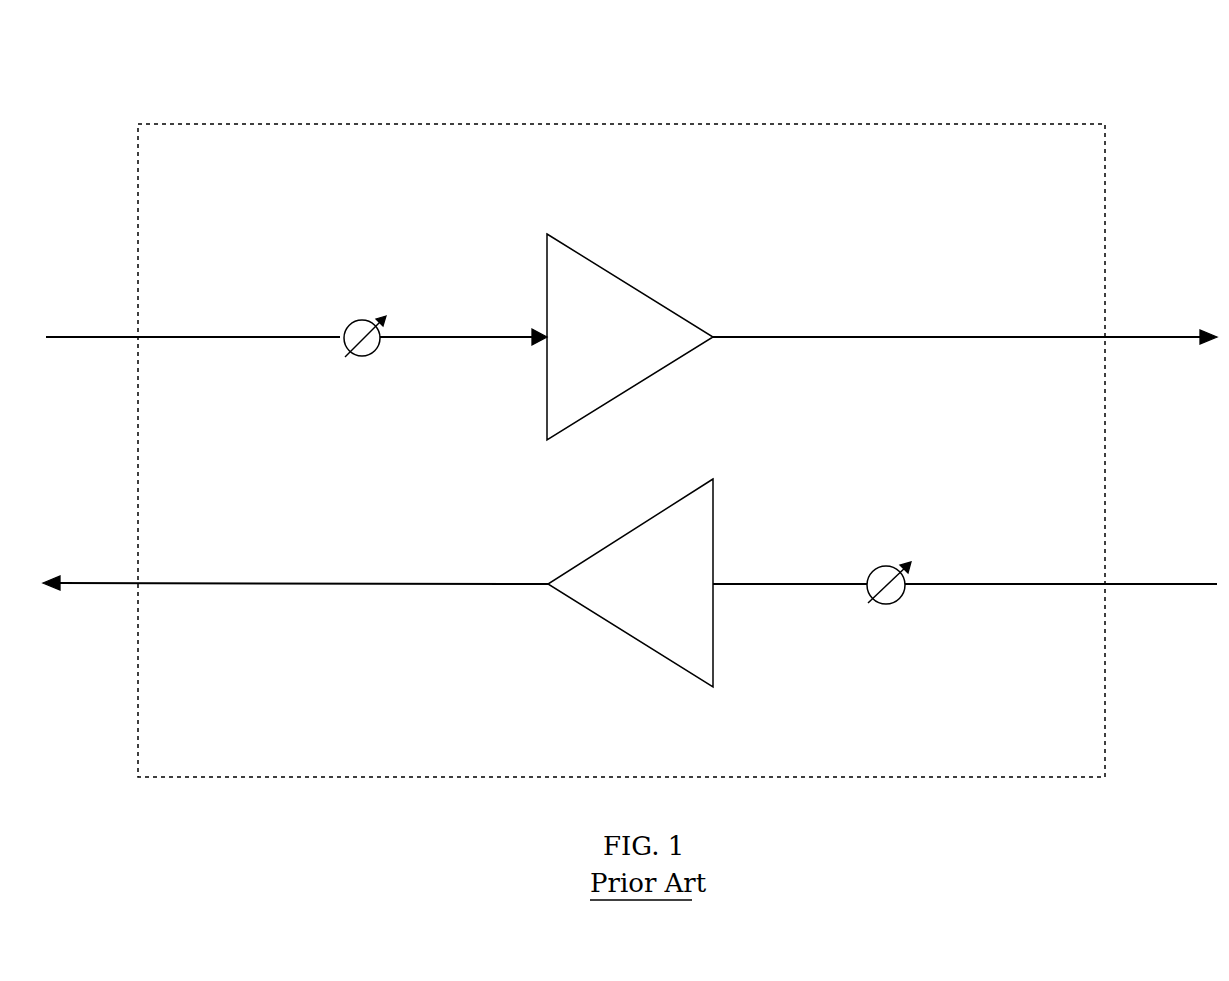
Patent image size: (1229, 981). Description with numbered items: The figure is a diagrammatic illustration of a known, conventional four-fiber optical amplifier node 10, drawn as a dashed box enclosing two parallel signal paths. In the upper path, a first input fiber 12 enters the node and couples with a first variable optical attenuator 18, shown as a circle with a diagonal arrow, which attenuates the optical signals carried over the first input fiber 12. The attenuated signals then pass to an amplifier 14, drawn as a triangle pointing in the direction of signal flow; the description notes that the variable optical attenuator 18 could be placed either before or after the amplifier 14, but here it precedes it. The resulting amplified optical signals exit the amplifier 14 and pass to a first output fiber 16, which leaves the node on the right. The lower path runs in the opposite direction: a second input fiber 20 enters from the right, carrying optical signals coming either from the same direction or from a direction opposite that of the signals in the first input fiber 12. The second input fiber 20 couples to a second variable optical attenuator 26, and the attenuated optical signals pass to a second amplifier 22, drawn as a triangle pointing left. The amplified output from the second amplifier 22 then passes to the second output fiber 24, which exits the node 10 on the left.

The optical amplifier node 10 is at (268, 123).
The first input fiber 12 is at (241, 336).
The amplifier 14 is at (622, 278).
The first output fiber 16 is at (937, 337).
The first variable optical attenuator 18 is at (361, 358).
The second input fiber 20 is at (1068, 585).
The second amplifier 22 is at (621, 631).
The second output fiber 24 is at (307, 583).
The second variable optical attenuator 26 is at (886, 605).